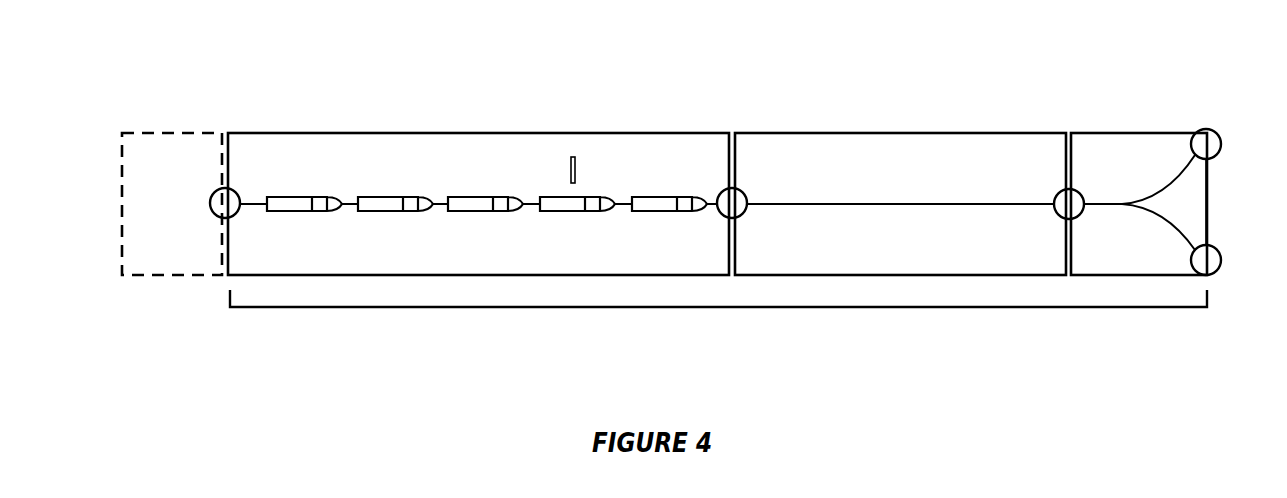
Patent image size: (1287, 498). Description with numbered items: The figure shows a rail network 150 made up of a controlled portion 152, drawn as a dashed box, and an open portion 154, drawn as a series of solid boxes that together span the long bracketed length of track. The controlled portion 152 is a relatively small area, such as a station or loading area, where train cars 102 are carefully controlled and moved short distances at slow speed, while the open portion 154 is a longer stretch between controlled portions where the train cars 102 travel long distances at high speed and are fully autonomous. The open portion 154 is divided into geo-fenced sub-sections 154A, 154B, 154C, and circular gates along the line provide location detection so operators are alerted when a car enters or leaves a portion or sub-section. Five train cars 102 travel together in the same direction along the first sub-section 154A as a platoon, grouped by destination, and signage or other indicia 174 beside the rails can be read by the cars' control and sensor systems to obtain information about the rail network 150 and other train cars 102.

The train car 102 is at (305, 211).
The rail network 150 is at (617, 93).
The controlled portion 152 is at (180, 133).
The open portion 154 is at (995, 307).
The sub-section of open portion 154A is at (385, 133).
The sub-section of open portion 154B is at (927, 133).
The sub-section of open portion 154C is at (1129, 133).
The signage or other indicia 174 is at (570, 170).